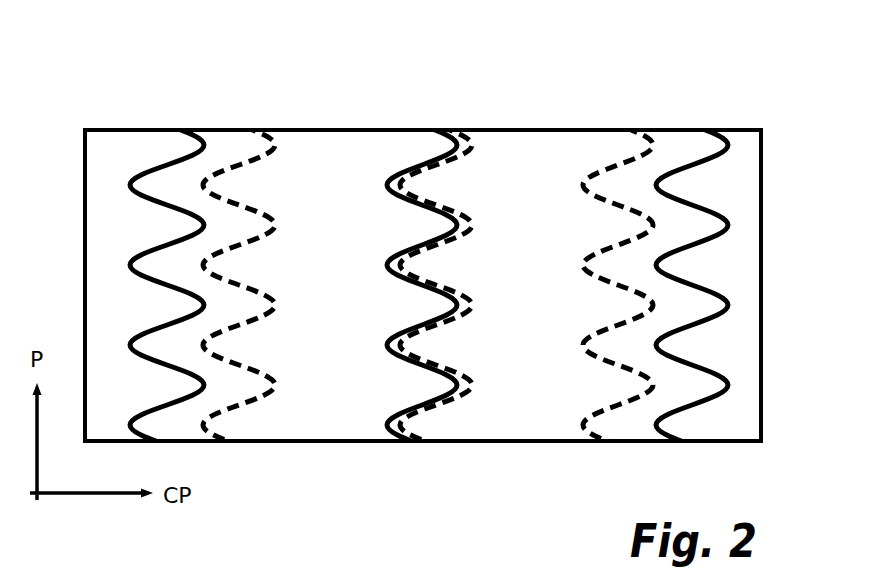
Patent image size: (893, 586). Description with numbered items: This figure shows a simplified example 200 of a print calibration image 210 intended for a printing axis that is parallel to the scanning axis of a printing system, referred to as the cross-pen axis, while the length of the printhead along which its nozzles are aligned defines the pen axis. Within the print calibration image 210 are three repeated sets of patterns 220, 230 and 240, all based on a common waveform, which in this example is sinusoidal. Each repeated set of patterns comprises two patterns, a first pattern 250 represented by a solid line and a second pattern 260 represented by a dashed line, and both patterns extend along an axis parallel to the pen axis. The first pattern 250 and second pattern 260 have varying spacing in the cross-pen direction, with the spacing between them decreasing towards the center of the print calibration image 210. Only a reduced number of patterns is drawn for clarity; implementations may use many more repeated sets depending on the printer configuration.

The simplified example 200 is at (124, 103).
The print calibration image 210 is at (498, 445).
The repeated set of patterns 220 is at (303, 232).
The repeated set of patterns 230 is at (379, 379).
The repeated set of patterns 240 is at (556, 216).
The first pattern 250 is at (143, 352).
The second pattern 260 is at (265, 312).